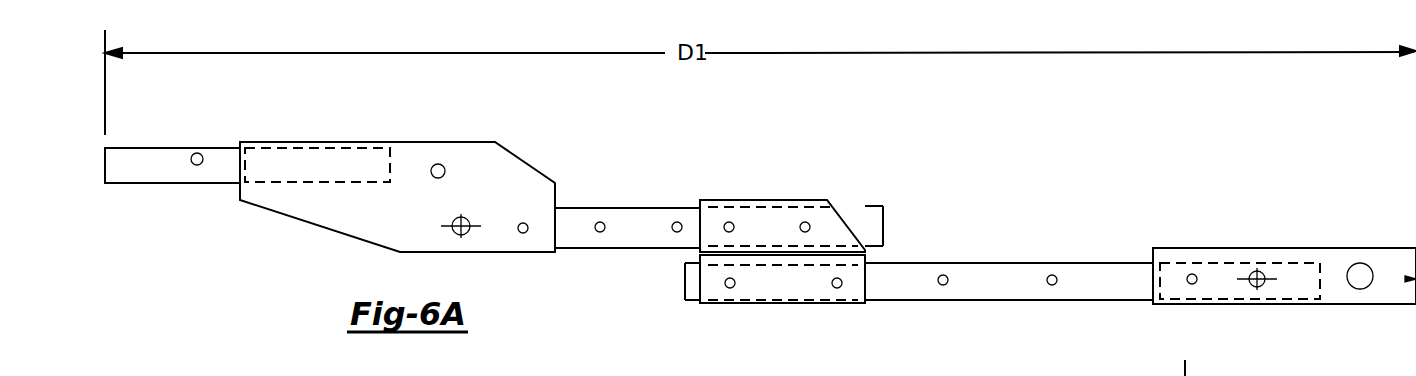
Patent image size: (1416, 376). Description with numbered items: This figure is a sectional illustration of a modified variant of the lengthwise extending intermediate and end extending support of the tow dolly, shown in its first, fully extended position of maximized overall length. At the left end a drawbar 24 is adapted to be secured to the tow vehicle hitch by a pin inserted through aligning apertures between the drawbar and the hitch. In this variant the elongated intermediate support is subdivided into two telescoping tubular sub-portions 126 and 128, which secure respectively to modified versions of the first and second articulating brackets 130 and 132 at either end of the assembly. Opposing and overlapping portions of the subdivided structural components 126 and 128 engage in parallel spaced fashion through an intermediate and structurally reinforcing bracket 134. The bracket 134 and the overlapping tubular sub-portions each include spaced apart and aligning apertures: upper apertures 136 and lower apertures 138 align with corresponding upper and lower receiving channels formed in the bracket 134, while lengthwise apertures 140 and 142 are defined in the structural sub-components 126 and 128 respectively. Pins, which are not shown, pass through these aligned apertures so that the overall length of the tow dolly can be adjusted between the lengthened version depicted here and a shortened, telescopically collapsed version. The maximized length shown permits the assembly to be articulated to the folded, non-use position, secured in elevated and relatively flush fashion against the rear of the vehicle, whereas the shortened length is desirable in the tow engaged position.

The drawbar 24 is at (155, 173).
The first telescoping sub-portion 126 is at (714, 225).
The second telescoping sub-portion 128 is at (919, 274).
The first articulating bracket 130 is at (403, 158).
The second articulating bracket 132 is at (1210, 248).
The intermediate structurally reinforcing bracket 134 is at (804, 257).
The upper apertures 136 is at (727, 222).
The lower apertures 138 is at (837, 288).
The lengthwise apertures 140 is at (677, 233).
The lengthwise apertures 142 is at (1050, 275).